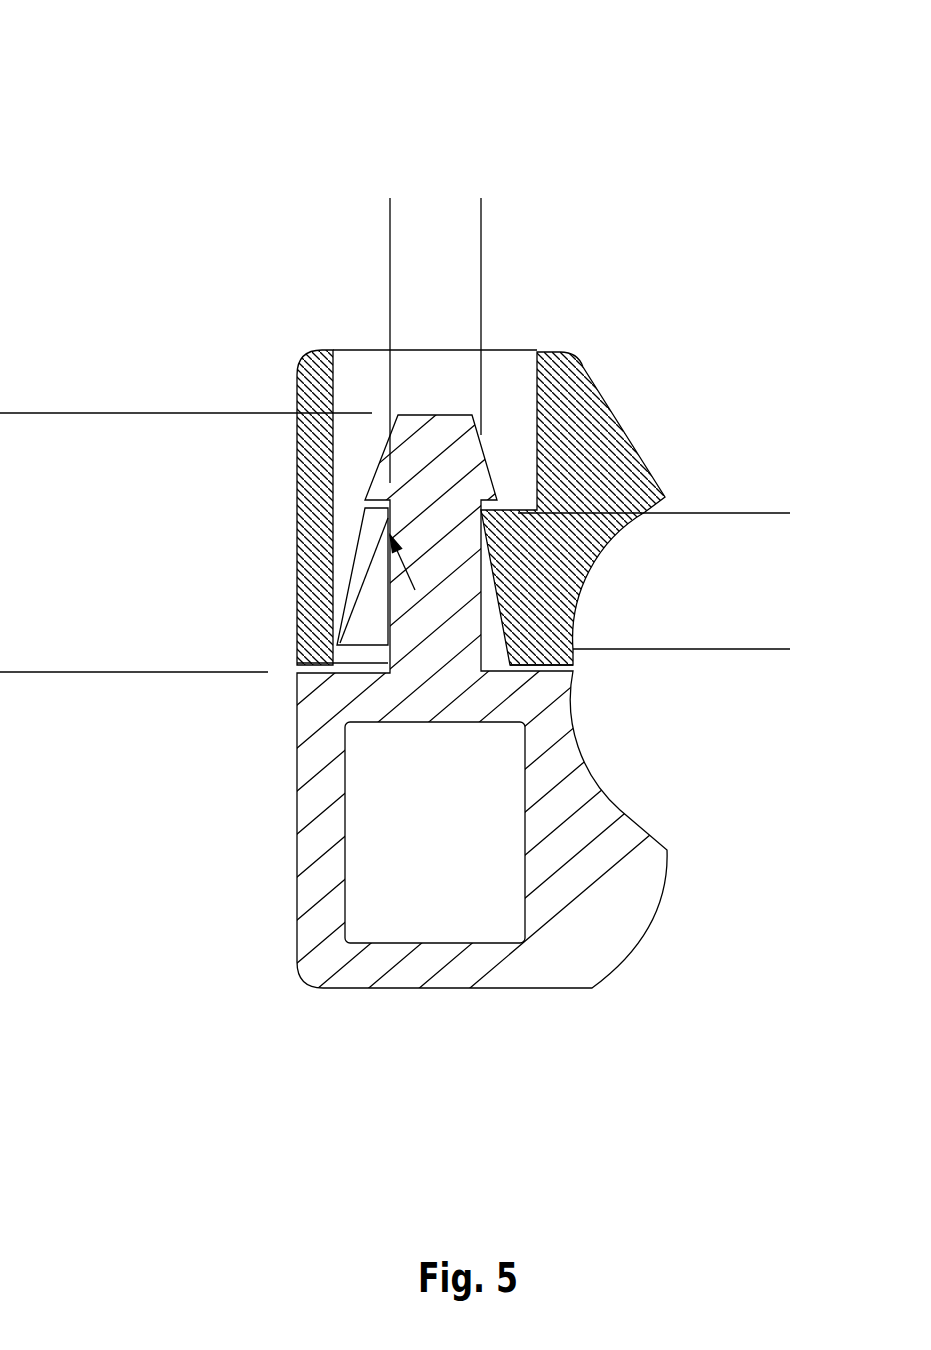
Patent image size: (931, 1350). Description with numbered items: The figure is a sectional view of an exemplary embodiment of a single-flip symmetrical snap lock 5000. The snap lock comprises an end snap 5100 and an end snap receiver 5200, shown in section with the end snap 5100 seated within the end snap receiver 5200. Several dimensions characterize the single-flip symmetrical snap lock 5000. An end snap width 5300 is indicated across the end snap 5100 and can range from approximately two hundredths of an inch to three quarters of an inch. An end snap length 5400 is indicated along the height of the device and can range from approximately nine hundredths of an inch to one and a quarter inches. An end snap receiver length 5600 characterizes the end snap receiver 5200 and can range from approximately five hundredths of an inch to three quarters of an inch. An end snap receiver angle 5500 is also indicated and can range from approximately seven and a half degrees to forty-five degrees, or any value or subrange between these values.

The single-flip symmetrical snap lock 5000 is at (125, 34).
The end snap 5100 is at (487, 427).
The end snap receiver 5200 is at (525, 543).
The end snap width 5300 is at (575, 237).
The end snap length 5400 is at (40, 672).
The end snap receiver angle 5500 is at (300, 518).
The end snap receiver length 5600 is at (753, 513).